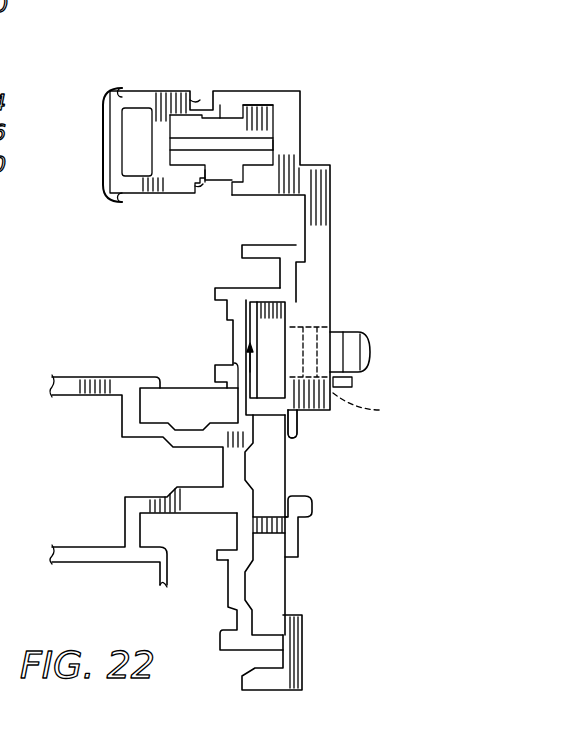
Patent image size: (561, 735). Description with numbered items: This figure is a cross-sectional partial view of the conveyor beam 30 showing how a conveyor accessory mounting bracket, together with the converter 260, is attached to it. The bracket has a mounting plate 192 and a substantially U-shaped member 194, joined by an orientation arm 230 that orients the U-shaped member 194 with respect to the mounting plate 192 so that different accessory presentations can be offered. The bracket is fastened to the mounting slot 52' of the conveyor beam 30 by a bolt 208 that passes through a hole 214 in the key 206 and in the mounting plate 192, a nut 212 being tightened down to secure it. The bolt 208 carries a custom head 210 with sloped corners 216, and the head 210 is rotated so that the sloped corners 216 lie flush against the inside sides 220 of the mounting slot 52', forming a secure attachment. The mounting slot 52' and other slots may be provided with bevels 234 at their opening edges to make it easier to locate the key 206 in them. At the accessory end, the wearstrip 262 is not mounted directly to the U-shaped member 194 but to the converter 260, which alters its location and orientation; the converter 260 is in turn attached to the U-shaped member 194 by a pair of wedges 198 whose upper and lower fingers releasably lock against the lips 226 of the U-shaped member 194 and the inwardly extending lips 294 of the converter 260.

The converter 260 is at (156, 90).
The wearstrip 262 is at (105, 137).
The inwardly extending lips 294 is at (197, 100).
The lips 226 is at (224, 108).
The wedges 198 is at (262, 162).
The substantially U-shaped member 194 is at (290, 150).
The orientation arm 230 is at (331, 198).
The mounting plate 192 is at (298, 290).
The inside sides of the mounting slot 220 is at (253, 300).
The custom head 210 is at (243, 345).
The mounting slot 52' is at (209, 353).
The key 206 is at (299, 410).
The bolt 208 is at (372, 352).
The sloped corners 216 is at (340, 330).
The nut 212 is at (370, 336).
The hole 214 is at (381, 412).
The bevels 234 is at (307, 503).
The conveyor beam 30 is at (166, 467).